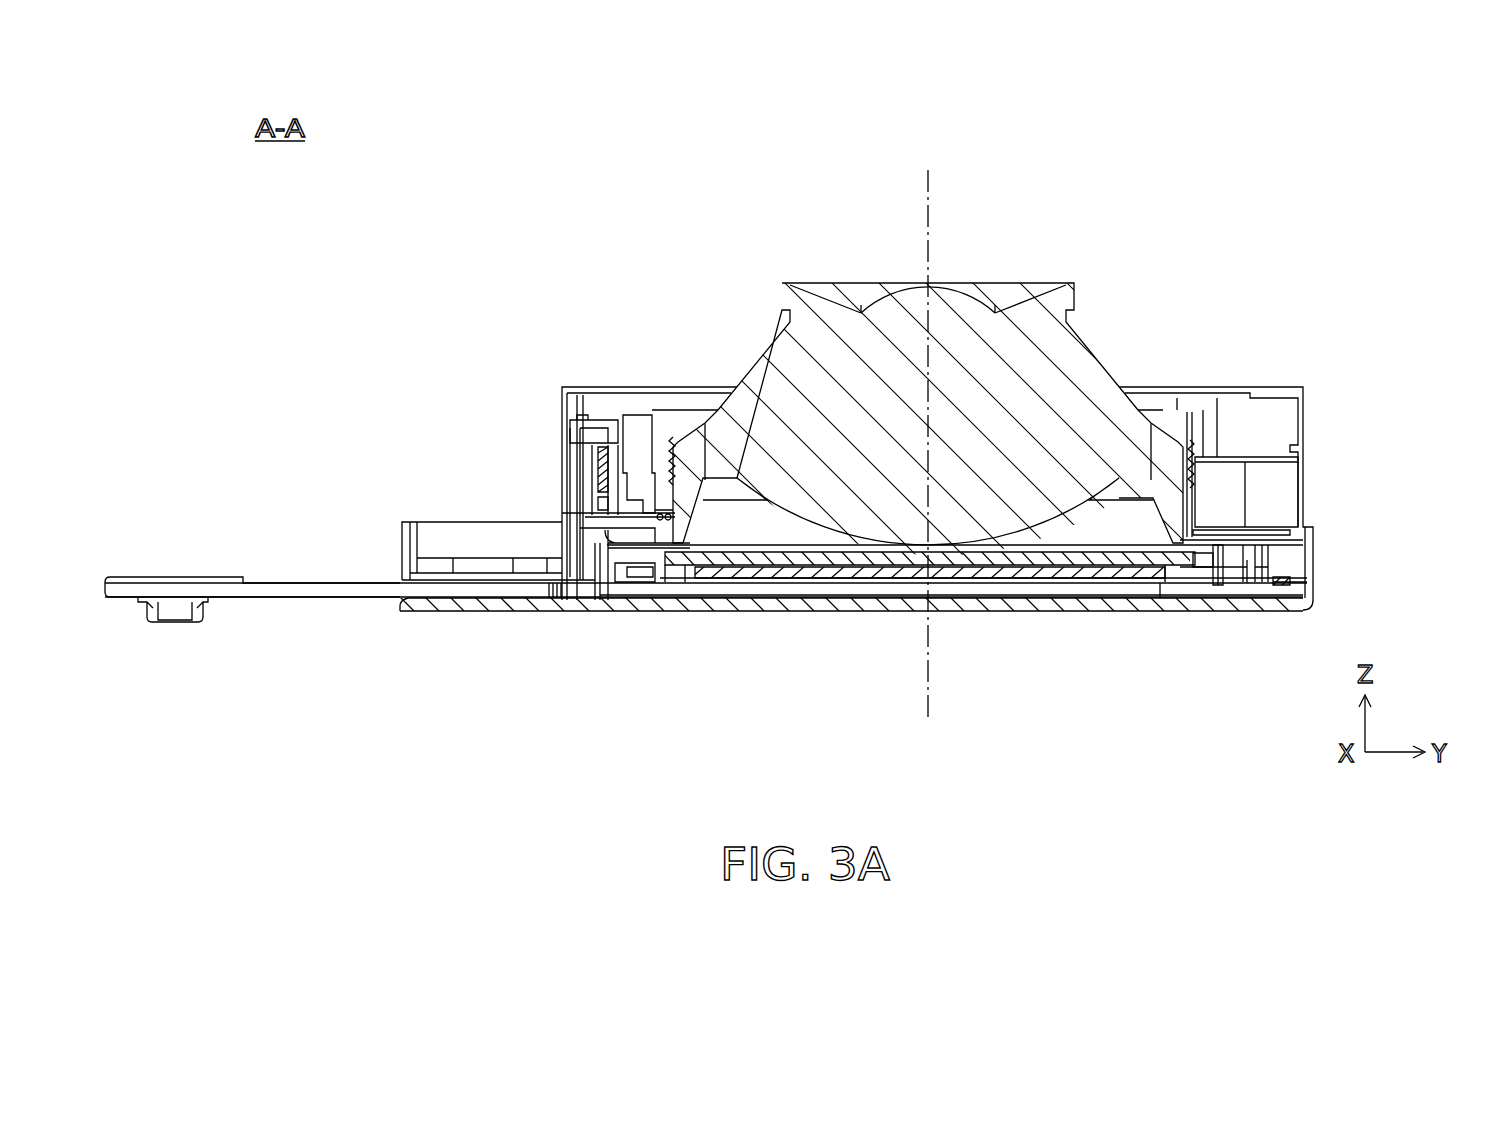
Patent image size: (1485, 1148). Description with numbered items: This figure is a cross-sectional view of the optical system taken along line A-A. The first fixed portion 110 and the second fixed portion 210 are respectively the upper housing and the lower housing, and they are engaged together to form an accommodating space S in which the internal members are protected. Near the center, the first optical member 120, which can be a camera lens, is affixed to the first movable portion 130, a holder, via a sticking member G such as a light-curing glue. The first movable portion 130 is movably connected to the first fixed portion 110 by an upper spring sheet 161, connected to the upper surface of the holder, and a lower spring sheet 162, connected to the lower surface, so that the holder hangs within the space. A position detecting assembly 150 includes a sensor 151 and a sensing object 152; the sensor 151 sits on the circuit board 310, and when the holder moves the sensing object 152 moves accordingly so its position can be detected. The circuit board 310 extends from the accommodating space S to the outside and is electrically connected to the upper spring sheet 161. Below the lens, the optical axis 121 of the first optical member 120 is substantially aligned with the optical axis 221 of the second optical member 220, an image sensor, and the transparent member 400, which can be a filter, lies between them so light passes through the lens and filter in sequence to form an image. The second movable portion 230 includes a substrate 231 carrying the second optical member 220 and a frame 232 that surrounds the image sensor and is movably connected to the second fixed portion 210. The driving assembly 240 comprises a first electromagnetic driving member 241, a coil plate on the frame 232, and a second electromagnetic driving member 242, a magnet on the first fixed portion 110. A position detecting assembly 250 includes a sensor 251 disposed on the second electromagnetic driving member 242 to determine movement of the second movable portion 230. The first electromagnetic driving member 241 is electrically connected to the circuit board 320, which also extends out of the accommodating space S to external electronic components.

The first fixed portion 110 is at (1278, 427).
The first optical member 120 is at (1025, 355).
The optical axis 121 is at (926, 185).
The first movable portion 130 is at (655, 413).
The sticking member G is at (680, 420).
The position detecting assembly 150 is at (509, 497).
The sensor 151 is at (595, 433).
The sensing object 152 is at (638, 453).
The upper spring sheet 161 is at (1197, 410).
The lower spring sheet 162 is at (655, 592).
The second fixed portion 210 is at (1100, 600).
The second optical member 220 is at (873, 598).
The optical axis 221 is at (957, 580).
The second movable portion 230 is at (795, 605).
The substrate 231 is at (1162, 595).
The frame 232 is at (1247, 562).
The driving assembly 240 is at (1330, 504).
The first electromagnetic driving member 241 is at (1290, 533).
The second electromagnetic driving member 242 is at (1278, 497).
The position detecting assembly 250 is at (1217, 525).
The sensor 251 is at (1223, 567).
The circuit board 310 is at (485, 600).
The circuit board 320 is at (593, 585).
The transparent member 400 is at (1042, 580).
The accommodating space S is at (1277, 560).